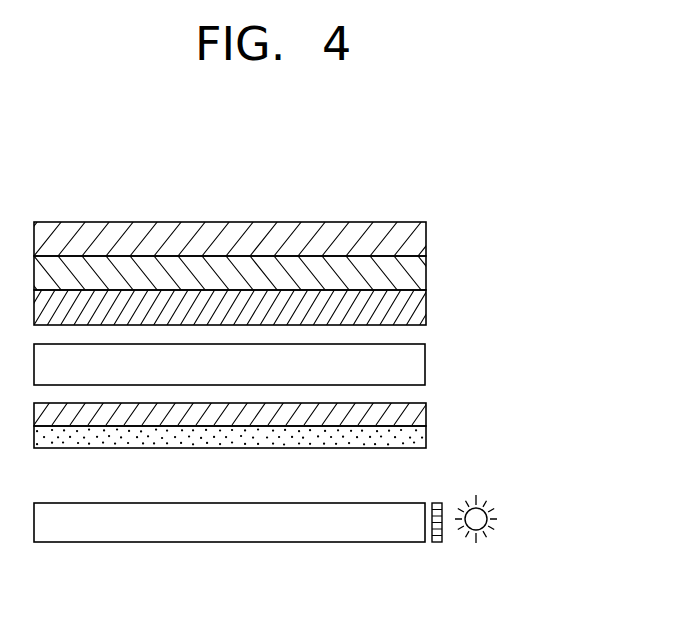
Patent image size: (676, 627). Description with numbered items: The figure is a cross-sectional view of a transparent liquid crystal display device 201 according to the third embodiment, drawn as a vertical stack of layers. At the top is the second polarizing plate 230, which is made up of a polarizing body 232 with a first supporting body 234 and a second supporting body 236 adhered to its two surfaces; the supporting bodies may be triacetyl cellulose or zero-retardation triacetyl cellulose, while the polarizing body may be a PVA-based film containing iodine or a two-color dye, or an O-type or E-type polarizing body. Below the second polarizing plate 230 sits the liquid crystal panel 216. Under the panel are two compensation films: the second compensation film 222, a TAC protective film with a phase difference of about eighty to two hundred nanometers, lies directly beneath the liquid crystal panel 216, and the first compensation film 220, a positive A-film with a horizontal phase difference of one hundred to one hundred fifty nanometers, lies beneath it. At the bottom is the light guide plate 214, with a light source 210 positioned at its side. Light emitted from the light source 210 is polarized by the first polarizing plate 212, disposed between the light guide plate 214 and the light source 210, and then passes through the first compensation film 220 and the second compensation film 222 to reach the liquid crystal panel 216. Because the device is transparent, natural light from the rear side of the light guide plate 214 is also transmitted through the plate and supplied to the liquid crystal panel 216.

The transparent liquid crystal display device 201 is at (482, 177).
The second polarizing plate 230 is at (279, 276).
The second supporting body 236 is at (418, 238).
The polarizing body 232 is at (418, 275).
The first supporting body 234 is at (259, 307).
The liquid crystal panel 216 is at (415, 365).
The second compensation film 222 is at (415, 412).
The first compensation film 220 is at (415, 438).
The light guide plate 214 is at (385, 532).
The first polarizing plate 212 is at (438, 532).
The light source 210 is at (484, 517).